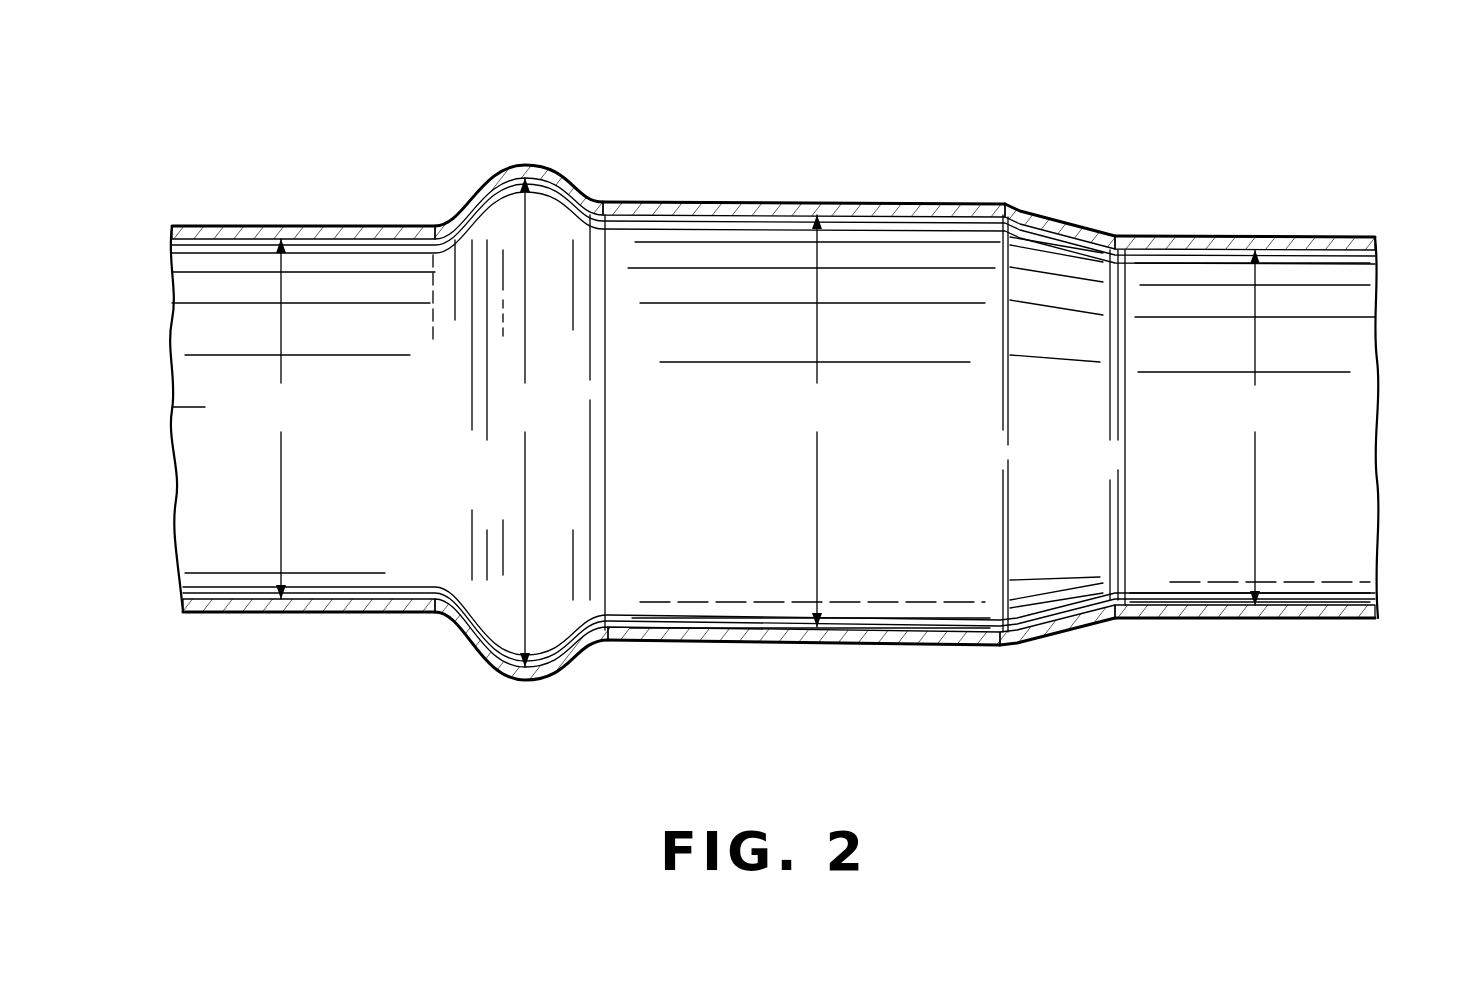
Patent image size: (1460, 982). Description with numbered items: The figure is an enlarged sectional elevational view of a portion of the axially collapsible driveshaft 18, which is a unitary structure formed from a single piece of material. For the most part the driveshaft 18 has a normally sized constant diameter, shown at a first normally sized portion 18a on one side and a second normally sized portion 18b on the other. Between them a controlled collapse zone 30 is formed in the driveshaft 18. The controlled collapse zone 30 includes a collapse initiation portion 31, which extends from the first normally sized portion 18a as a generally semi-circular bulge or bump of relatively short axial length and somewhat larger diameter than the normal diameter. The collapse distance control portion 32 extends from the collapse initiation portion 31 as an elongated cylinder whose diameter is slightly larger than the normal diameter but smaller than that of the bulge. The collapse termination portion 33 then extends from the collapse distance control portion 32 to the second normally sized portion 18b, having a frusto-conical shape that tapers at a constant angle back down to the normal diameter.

The driveshaft 18 is at (1226, 92).
The first normally sized portion 18a is at (231, 228).
The second normally sized portion 18b is at (1330, 237).
The controlled collapse zone 30 is at (1128, 700).
The collapse initiation portion 31 is at (592, 100).
The collapse distance control portion 32 is at (1000, 100).
The collapse termination portion 33 is at (1125, 100).